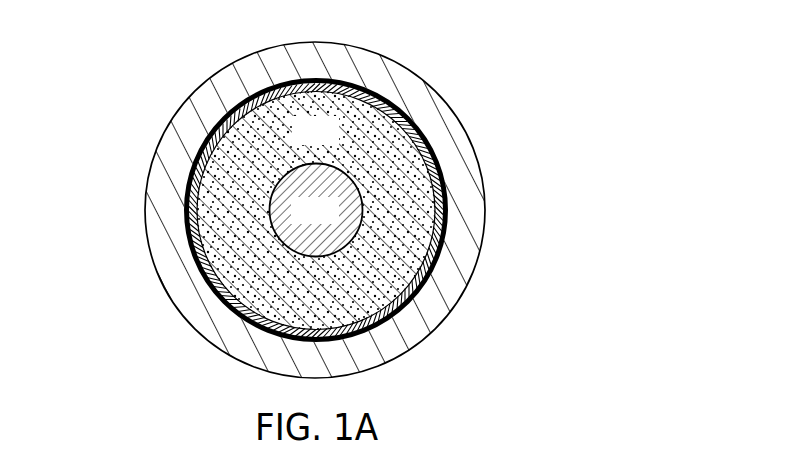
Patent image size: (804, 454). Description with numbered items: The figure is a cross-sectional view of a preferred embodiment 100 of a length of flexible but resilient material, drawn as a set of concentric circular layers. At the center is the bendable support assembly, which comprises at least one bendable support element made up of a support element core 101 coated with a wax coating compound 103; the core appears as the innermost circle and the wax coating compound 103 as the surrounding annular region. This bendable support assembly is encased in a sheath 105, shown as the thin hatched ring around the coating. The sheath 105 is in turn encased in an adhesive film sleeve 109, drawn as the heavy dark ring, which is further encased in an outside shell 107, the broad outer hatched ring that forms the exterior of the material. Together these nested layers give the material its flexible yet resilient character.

The preferred embodiment 100 is at (87, 70).
The support element core 101 is at (333, 221).
The wax coating compound 103 is at (333, 141).
The sheath 105 is at (258, 92).
The outside shell 107 is at (427, 83).
The adhesive film sleeve 109 is at (187, 187).